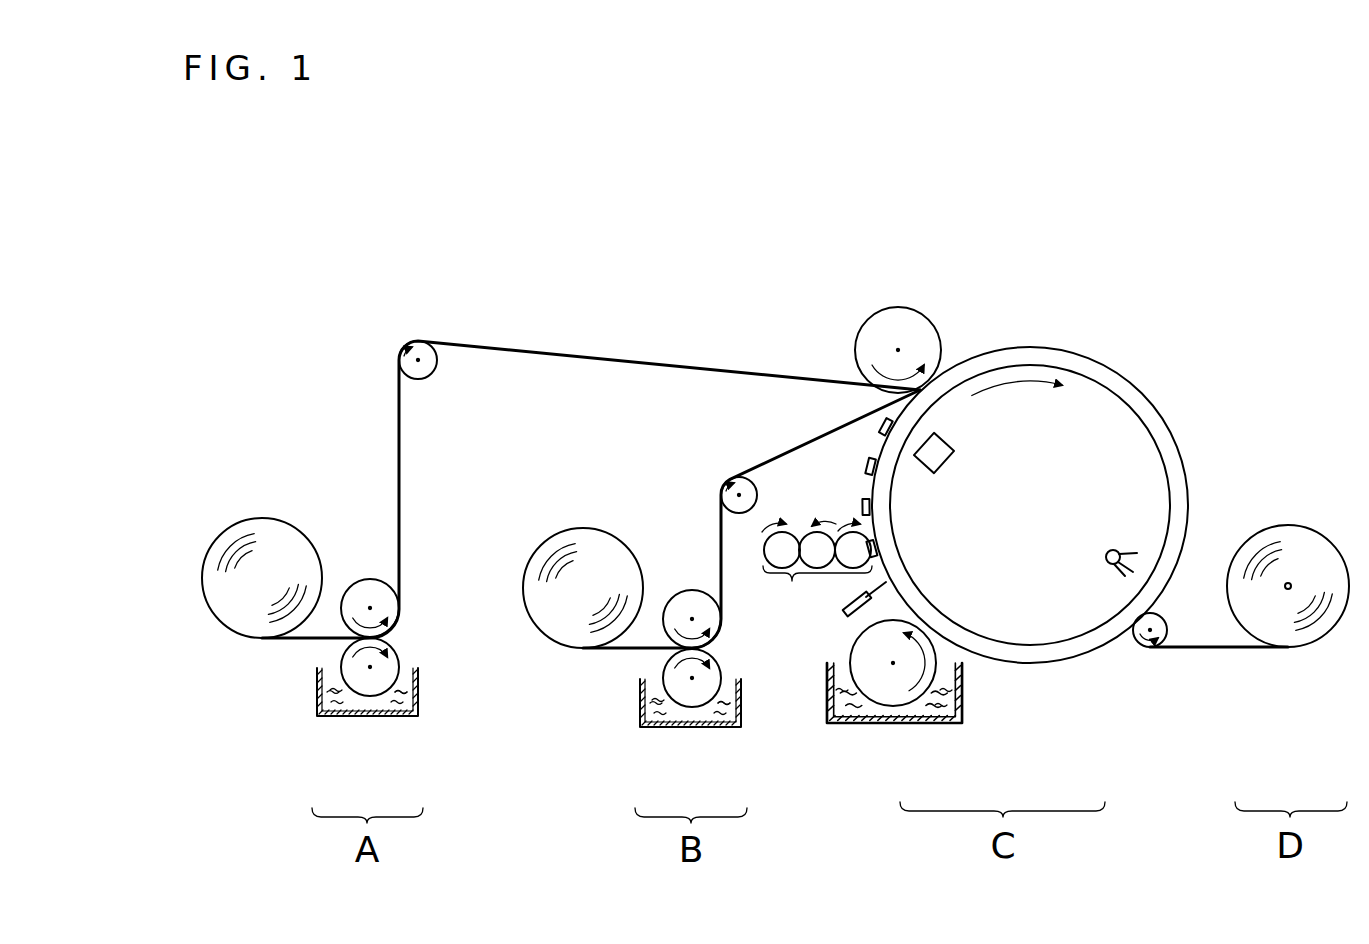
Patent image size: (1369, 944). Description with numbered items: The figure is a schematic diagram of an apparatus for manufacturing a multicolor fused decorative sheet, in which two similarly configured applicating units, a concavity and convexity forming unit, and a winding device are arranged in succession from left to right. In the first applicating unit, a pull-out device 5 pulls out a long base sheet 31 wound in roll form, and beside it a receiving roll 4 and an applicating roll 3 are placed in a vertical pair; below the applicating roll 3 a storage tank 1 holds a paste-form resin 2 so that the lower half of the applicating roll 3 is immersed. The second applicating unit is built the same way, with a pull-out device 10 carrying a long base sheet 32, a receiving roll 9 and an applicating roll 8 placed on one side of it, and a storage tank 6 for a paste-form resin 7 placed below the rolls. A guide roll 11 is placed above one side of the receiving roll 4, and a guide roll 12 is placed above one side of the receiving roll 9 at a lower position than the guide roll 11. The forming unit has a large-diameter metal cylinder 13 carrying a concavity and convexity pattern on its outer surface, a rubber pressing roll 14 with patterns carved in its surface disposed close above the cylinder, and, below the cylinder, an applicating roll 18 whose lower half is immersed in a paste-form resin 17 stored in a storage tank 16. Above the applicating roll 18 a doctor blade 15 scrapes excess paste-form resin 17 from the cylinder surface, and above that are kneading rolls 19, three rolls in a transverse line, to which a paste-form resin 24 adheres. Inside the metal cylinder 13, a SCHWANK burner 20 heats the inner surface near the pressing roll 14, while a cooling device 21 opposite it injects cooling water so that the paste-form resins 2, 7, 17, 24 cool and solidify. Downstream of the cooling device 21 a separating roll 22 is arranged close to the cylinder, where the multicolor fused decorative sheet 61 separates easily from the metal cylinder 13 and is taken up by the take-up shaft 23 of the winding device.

The storage tank 1 is at (317, 702).
The paste-form resin 2 is at (366, 712).
The applicating roll 3 is at (398, 656).
The receiving roll 4 is at (366, 580).
The pull-out device 5 is at (217, 649).
The storage tank 6 is at (641, 712).
The paste-form resin 7 is at (688, 716).
The applicating roll 8 is at (722, 668).
The receiving roll 9 is at (690, 590).
The pull-out device 10 is at (539, 660).
The guide roll 11 is at (399, 352).
The guide roll 12 is at (729, 480).
The metal cylinder 13 is at (1074, 348).
The pressing roll 14 is at (876, 312).
The doctor blade 15 is at (847, 603).
The storage tank 16 is at (845, 726).
The paste-form resin 17 is at (945, 717).
The applicating roll 18 is at (826, 690).
The kneading rolls 19 is at (817, 595).
The SCHWANK burner 20 is at (956, 461).
The cooling device 21 is at (1106, 553).
The separating roll 22 is at (1140, 649).
The take-up shaft 23 is at (1289, 582).
The paste-form resin 24 is at (800, 535).
The long base sheet 31 is at (291, 642).
The long base sheet 32 is at (618, 652).
The multicolor fused decorative sheet 61 is at (1200, 649).